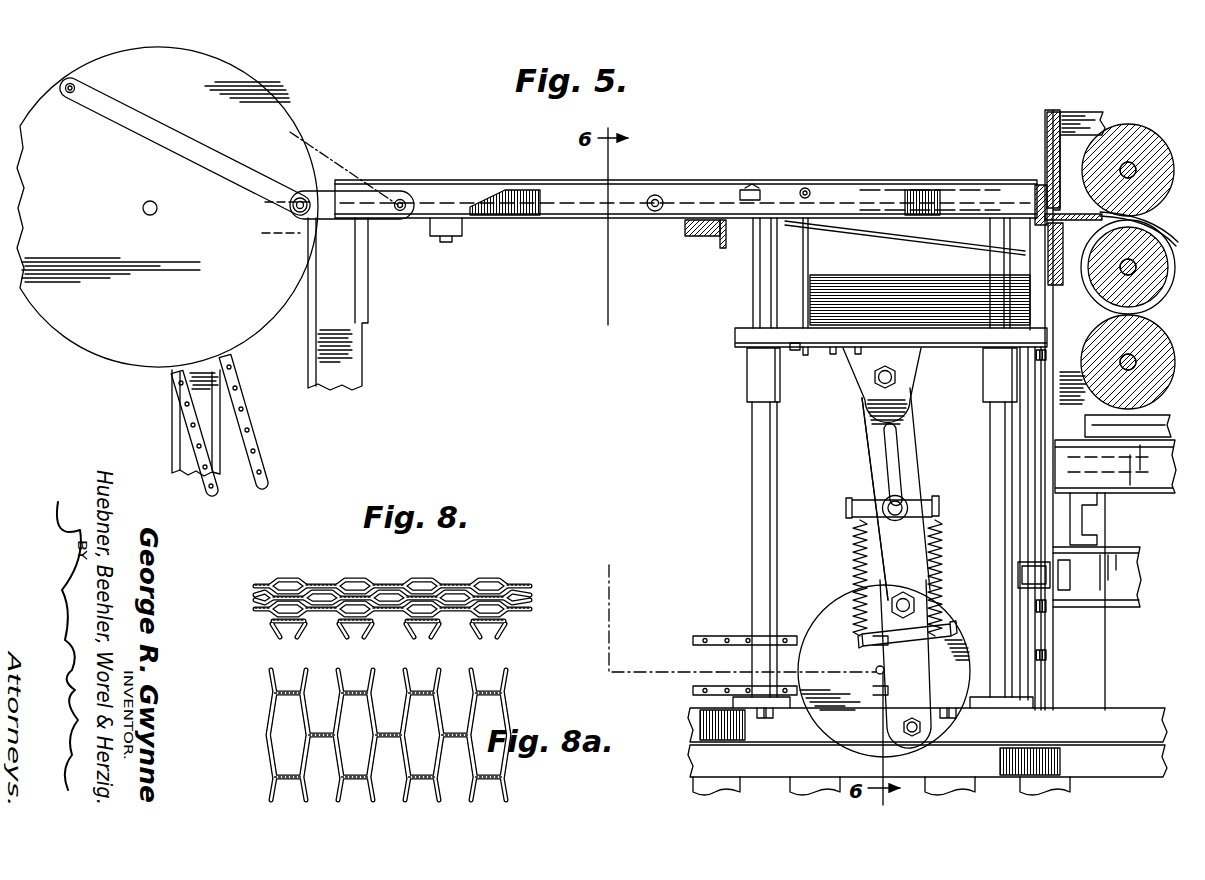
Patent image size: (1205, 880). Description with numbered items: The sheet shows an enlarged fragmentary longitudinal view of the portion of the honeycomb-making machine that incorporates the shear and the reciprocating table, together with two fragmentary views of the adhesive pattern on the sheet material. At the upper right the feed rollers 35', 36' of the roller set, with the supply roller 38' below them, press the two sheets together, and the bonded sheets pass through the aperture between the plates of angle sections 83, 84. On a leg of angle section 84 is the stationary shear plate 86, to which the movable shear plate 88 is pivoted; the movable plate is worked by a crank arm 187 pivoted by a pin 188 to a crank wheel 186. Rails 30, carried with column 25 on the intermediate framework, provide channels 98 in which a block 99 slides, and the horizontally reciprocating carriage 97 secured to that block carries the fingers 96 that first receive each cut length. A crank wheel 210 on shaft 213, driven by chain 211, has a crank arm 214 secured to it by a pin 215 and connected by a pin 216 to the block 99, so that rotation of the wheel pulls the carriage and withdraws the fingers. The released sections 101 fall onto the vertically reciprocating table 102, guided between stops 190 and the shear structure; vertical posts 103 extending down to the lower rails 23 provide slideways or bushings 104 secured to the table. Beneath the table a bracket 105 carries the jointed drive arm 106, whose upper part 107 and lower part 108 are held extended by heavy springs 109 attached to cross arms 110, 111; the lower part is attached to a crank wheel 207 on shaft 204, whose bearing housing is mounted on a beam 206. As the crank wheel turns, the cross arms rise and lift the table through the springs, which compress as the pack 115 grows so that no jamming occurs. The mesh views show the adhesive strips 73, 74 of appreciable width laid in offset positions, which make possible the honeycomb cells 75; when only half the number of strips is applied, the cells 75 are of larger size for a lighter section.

In FIG. 5, the crank wheel 210 is at (214, 62).
In FIG. 5, the crank arm 214 is at (310, 196).
In FIG. 5, the pin 215 is at (66, 96).
In FIG. 5, the shaft 213 is at (152, 215).
In FIG. 5, the chain 211 is at (262, 448).
In FIG. 5, the rails 30 is at (500, 180).
In FIG. 5, the channels 98 is at (417, 226).
In FIG. 5, the pin 216 is at (654, 195).
In FIG. 5, the carriage 97 is at (699, 237).
In FIG. 5, the block 99 is at (882, 210).
In FIG. 5, the angle section 83 is at (1040, 172).
In FIG. 5, the stationary shear plate 86 is at (1064, 227).
In FIG. 5, the angle section 84 is at (1062, 284).
In FIG. 5, the feed roller 35' is at (1128, 154).
In FIG. 5, the feed roller 36' is at (1133, 270).
In FIG. 5, the supply roller 38' is at (1117, 362).
In FIG. 5, the rails 23 is at (1153, 490).
In FIG. 5, the column 25 is at (1090, 648).
In FIG. 5, the pack 115 is at (802, 311).
In FIG. 5, the vertical posts 103 is at (752, 470).
In FIG. 5, the slideways or bushings 104 is at (748, 372).
In FIG. 5, the stops 190 is at (810, 245).
In FIG. 5, the sections 101 is at (860, 278).
In FIG. 5, the fingers 96 is at (876, 231).
In FIG. 5, the movable shear plate 88 is at (1030, 227).
In FIG. 5, the table 102 is at (800, 351).
In FIG. 5, the bracket 105 is at (858, 376).
In FIG. 5, the upper part 107 is at (911, 400).
In FIG. 5, the jointed drive arm 106 is at (858, 418).
In FIG. 5, the cross arm 110 is at (920, 508).
In FIG. 5, the heavy springs 109 is at (858, 543).
In FIG. 5, the crank arm 187 is at (1025, 447).
In FIG. 5, the crank wheel 186 is at (1036, 545).
In FIG. 5, the pin 188 is at (1018, 570).
In FIG. 5, the crank wheel 207 is at (833, 612).
In FIG. 5, the lower part 108 is at (897, 690).
In FIG. 5, the cross arm 111 is at (903, 643).
In FIG. 5, the shaft 204 is at (876, 669).
In FIG. 5, the beam 206 is at (782, 709).
In FIG. 8, the honeycomb cells 75 is at (484, 585).
In FIG. 8A, the honeycomb cells 75 is at (329, 723).
In FIG. 8, the adhesive strip 73 is at (324, 585).
In FIG. 8, the adhesive strip 74 is at (358, 597).